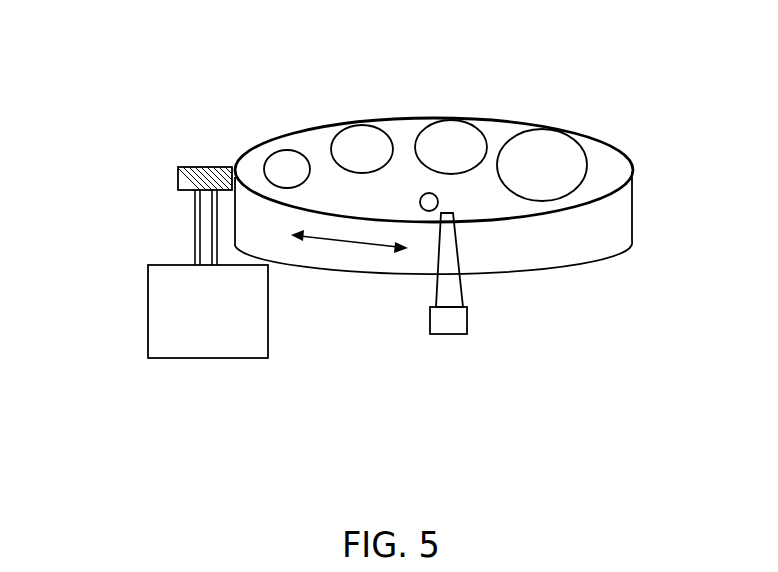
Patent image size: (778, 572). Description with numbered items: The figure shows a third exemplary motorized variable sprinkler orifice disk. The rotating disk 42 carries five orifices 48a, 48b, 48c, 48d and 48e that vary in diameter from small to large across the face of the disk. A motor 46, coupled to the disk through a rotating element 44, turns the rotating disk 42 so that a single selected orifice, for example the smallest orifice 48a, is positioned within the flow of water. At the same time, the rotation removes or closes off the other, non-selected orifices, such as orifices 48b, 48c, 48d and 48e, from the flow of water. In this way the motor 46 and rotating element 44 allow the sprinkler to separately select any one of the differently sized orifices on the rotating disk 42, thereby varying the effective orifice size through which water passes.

The rotating disk 42 is at (567, 243).
The rotating element 44 is at (435, 334).
The motor 46 is at (155, 335).
The orifice 48a is at (287, 163).
The orifice 48b is at (362, 145).
The orifice 48c is at (424, 194).
The orifice 48d is at (475, 142).
The orifice 48e is at (557, 152).